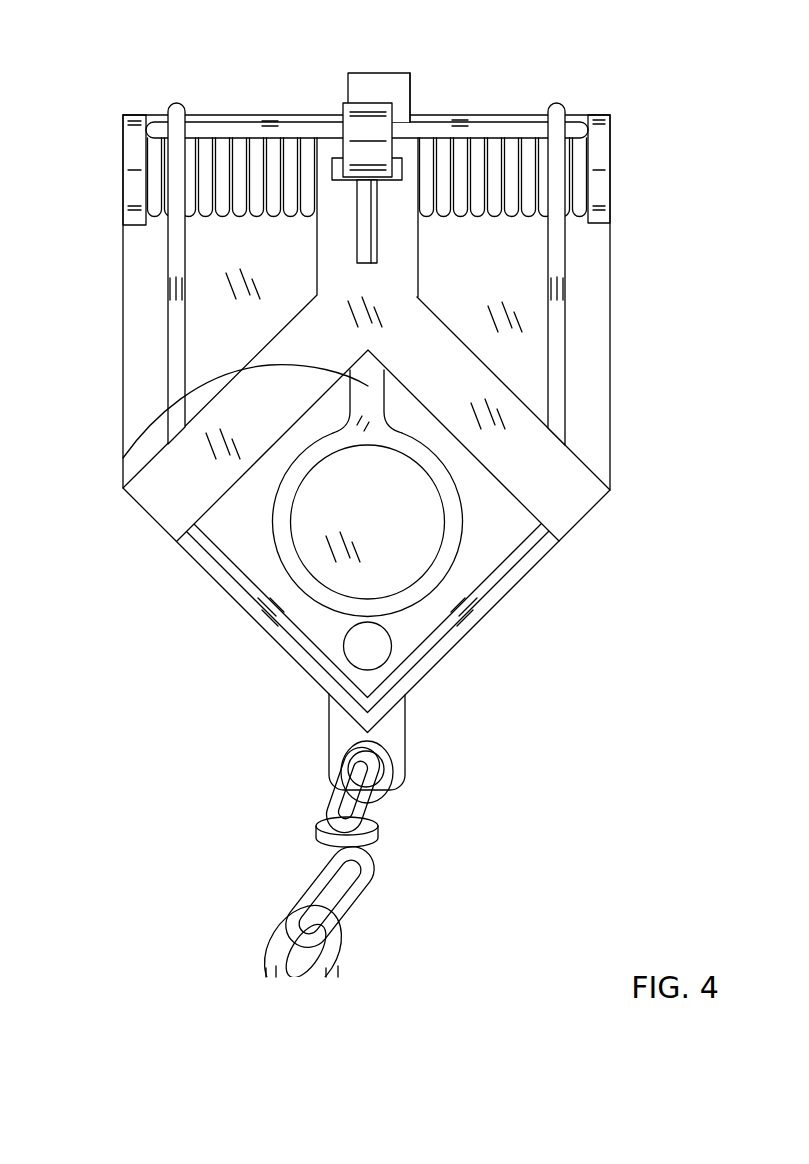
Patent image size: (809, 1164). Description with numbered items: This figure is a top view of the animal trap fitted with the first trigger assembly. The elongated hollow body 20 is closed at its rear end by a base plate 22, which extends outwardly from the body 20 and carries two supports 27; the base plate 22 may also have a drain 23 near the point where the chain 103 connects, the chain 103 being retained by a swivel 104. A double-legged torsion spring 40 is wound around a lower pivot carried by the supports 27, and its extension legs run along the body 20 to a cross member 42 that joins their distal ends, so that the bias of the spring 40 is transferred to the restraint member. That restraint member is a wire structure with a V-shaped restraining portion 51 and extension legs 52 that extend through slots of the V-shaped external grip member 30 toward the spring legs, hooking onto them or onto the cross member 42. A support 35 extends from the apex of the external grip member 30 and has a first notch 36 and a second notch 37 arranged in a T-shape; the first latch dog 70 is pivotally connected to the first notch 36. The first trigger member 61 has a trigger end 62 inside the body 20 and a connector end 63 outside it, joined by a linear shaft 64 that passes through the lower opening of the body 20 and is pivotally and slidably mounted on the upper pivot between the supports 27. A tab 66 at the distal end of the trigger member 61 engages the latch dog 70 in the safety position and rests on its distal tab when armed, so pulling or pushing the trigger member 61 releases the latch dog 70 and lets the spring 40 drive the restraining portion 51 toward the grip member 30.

The hollow body 20 is at (490, 612).
The base plate 22 is at (590, 372).
The drain 23 is at (394, 653).
The supports 27 is at (133, 190).
The external grip member 30 is at (558, 508).
The support 35 is at (378, 283).
The first notch 36 is at (350, 177).
The second notch 37 is at (345, 242).
The torsion spring 40 is at (220, 216).
The cross member 42 is at (212, 130).
The restraining portion 51 is at (367, 693).
The extension legs 52 is at (173, 366).
The first trigger member 61 is at (268, 516).
The trigger end 62 is at (285, 552).
The connector end 63 is at (418, 103).
The shaft 64 is at (123, 458).
The tab 66 is at (376, 72).
The first latch dog 70 is at (348, 130).
The chain 103 is at (268, 945).
The swivel 104 is at (378, 845).